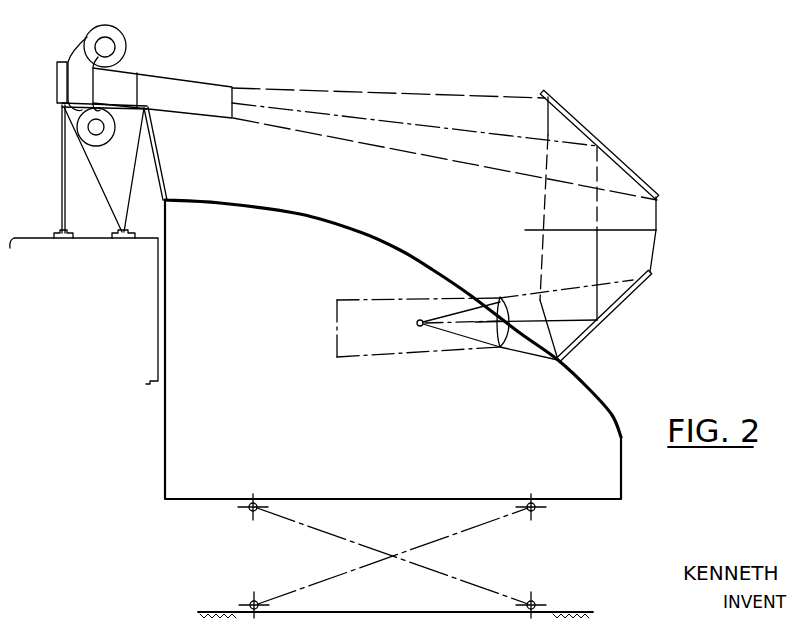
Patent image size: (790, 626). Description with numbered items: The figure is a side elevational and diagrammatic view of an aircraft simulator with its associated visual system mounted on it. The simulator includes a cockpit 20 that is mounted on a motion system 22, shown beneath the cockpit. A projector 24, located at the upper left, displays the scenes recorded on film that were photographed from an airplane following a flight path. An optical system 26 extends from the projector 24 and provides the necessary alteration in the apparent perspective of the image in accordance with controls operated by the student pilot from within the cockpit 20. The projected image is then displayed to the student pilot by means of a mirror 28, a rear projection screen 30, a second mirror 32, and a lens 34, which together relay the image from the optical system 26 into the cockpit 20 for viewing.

The cockpit 20 is at (246, 413).
The motion system 22 is at (515, 561).
The projector 24 is at (78, 55).
The optical system 26 is at (173, 78).
The mirror 28 is at (542, 92).
The rear projection screen 30 is at (525, 230).
The mirror 32 is at (602, 325).
The lens 34 is at (510, 313).